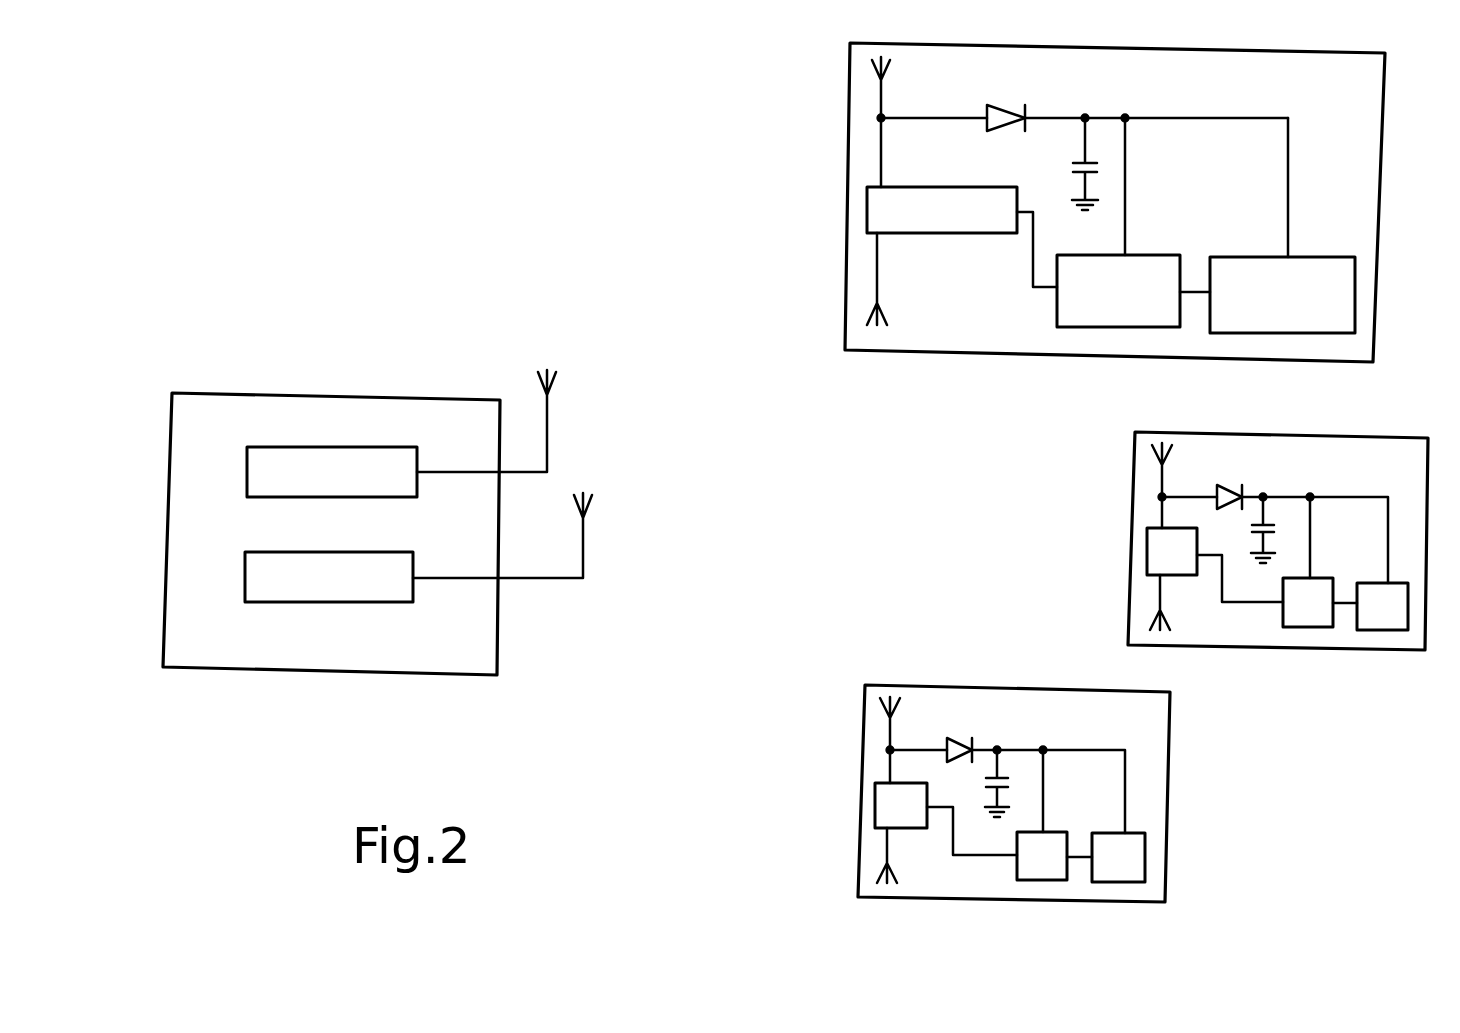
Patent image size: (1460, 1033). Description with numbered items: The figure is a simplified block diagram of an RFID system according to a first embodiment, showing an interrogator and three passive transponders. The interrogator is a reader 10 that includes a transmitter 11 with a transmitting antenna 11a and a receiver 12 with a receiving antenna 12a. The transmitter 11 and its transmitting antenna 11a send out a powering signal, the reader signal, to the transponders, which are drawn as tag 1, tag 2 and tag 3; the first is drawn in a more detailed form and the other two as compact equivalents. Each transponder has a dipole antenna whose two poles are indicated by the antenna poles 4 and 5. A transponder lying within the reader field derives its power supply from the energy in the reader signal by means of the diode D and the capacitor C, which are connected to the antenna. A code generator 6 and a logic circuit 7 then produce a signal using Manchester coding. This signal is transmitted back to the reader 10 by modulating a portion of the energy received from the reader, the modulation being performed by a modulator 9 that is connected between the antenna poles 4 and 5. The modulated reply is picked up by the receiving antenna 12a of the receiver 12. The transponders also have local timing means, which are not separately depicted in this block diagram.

The tag 1 is at (782, 183).
The tag 2 is at (1090, 505).
The tag 3 is at (824, 770).
The antenna pole 4 is at (884, 312).
The antenna pole 5 is at (886, 72).
The code generator 6 is at (1316, 257).
The logic circuit 7 is at (1155, 255).
The modulator 9 is at (955, 233).
The reader 10 is at (241, 393).
The transmitter 11 is at (247, 466).
The receiver 12 is at (245, 573).
The transmitting antenna 11a is at (552, 386).
The receiving antenna 12a is at (588, 508).
The diode D is at (1095, 419).
The capacitor C is at (1141, 467).